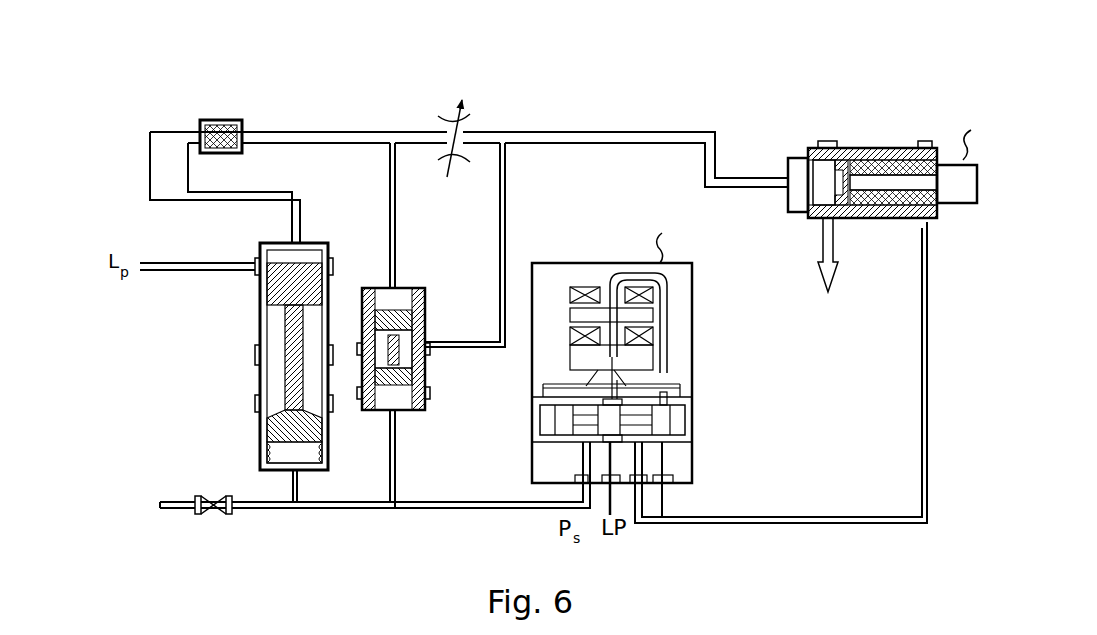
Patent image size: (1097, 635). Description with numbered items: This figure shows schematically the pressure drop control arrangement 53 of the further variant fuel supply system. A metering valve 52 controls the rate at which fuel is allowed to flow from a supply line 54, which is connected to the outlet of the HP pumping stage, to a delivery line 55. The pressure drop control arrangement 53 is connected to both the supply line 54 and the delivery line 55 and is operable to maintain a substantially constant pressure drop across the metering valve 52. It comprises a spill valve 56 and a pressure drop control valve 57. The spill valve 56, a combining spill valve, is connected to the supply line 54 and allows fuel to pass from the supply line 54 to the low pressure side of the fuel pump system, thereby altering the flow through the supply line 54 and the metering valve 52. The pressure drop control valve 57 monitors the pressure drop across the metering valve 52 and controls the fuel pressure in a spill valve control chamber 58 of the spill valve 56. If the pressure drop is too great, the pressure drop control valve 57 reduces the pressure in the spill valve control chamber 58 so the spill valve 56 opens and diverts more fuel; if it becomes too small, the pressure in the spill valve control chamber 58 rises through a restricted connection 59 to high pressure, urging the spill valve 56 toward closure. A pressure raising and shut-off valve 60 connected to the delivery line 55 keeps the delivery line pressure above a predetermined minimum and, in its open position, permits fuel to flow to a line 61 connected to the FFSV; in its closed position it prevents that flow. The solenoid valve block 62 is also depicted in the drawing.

The metering valve 52 is at (443, 85).
The pressure drop control arrangement 53 is at (138, 361).
The supply line 54 is at (320, 128).
The delivery line 55 is at (594, 129).
The spill valve 56 is at (250, 290).
The pressure drop control valve 57 is at (437, 297).
The spill valve control chamber 58 is at (282, 458).
The restricted connection 59 is at (208, 520).
The pressure raising and shut-off valve (PRSOV) 60 is at (846, 133).
The line 61 is at (818, 240).
The solenoid valve block 62 is at (704, 385).